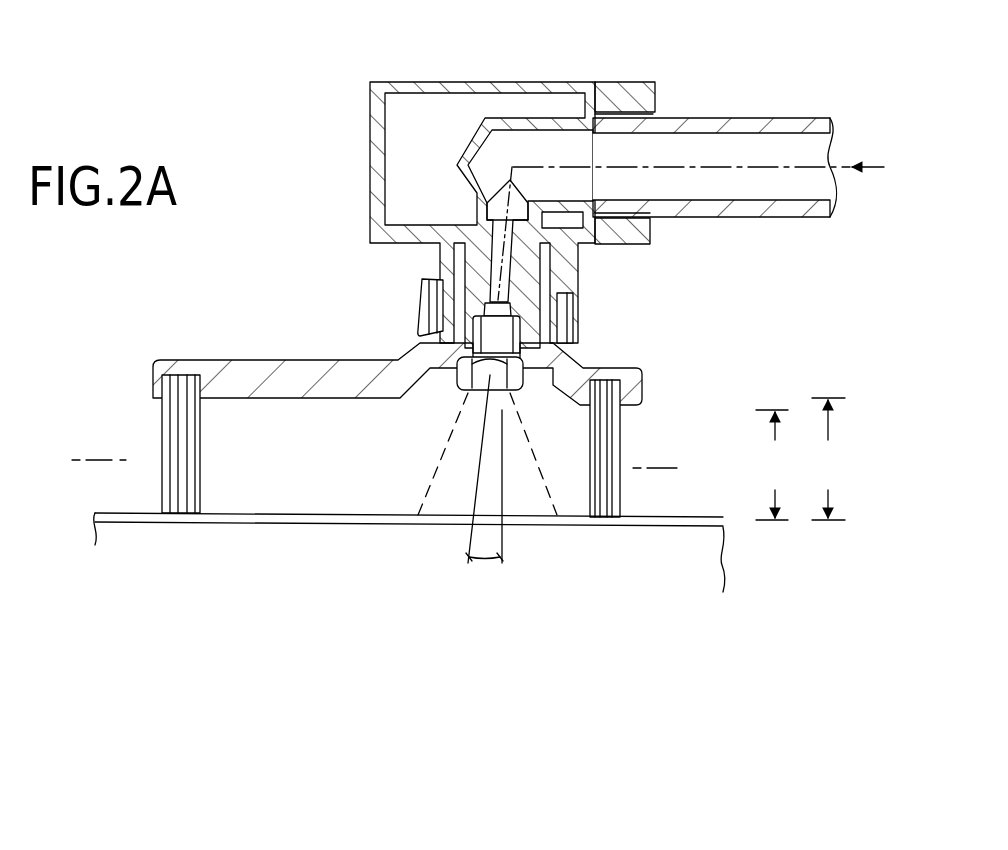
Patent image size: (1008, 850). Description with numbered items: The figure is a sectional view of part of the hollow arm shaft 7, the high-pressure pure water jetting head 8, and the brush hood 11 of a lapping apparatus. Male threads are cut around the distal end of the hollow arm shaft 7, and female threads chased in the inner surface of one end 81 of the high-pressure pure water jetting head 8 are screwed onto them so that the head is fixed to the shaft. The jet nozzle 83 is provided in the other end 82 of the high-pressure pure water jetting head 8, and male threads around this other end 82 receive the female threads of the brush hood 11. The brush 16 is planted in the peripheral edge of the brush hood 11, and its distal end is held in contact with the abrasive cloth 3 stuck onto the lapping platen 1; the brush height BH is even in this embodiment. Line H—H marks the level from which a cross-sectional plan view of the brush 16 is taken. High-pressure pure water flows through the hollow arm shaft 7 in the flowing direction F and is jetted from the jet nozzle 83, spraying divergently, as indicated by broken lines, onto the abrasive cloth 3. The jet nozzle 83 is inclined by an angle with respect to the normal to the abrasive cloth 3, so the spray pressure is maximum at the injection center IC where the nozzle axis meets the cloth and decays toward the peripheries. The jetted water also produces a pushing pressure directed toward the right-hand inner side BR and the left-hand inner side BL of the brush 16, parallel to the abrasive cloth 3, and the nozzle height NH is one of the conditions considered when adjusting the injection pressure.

The high-pressure pure water jetting head 8 is at (366, 128).
The one end of the high-pressure pure water jetting head 81 is at (622, 83).
The hollow arm shaft 7 is at (791, 125).
The other end of the high-pressure pure water jetting head 82 is at (432, 353).
The jet nozzle 83 is at (511, 392).
The brush hood 11 is at (641, 368).
The brush 16 is at (624, 443).
The abrasive cloth 3 is at (700, 513).
The lapping platen 1 is at (708, 567).
The flowing direction F is at (877, 168).
The line H— H is at (376, 465).
The left-hand inner side of the brush BL is at (199, 511).
The right-hand inner side of the brush BR is at (578, 508).
The high-pressure pure water injection center IC is at (440, 497).
The brush height BH is at (774, 465).
The nozzle height NH is at (829, 459).